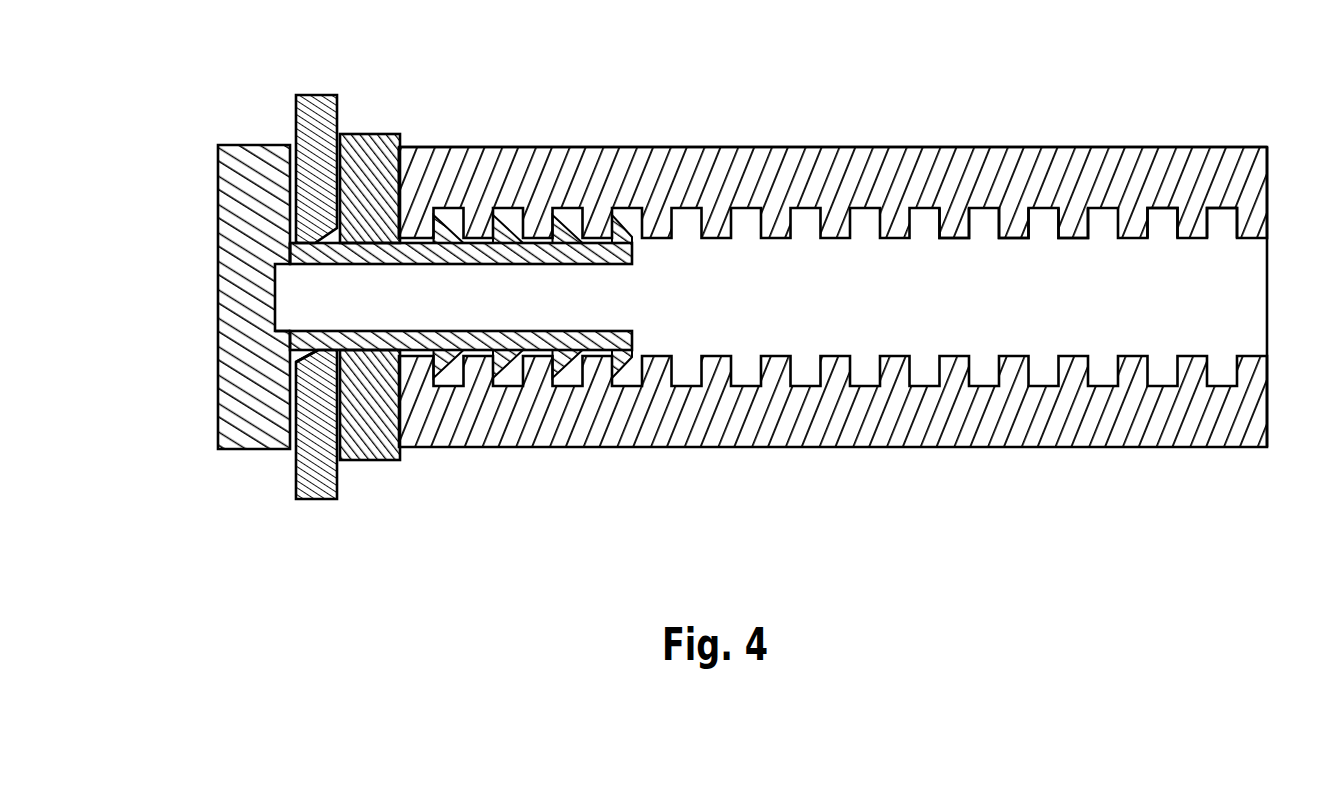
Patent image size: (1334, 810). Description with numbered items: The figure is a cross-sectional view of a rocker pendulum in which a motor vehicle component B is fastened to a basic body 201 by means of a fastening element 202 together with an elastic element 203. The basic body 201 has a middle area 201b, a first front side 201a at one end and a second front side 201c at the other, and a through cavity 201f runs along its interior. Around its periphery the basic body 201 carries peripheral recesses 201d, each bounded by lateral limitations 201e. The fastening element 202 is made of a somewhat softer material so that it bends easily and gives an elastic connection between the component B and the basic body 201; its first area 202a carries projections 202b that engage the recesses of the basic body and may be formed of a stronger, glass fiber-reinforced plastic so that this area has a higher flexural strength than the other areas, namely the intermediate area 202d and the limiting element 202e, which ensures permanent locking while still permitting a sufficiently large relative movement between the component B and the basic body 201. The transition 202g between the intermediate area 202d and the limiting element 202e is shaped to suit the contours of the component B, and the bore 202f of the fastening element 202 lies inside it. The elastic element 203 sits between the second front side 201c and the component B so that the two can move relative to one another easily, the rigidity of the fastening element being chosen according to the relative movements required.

The basic body 201 is at (752, 145).
The first front side 201a is at (1268, 213).
The middle area 201b is at (822, 185).
The second front side 201c is at (400, 175).
The peripheral recesses 201d is at (1220, 222).
The lateral limitations 201e is at (1073, 217).
The through cavity 201f is at (1003, 310).
The fastening element 202 is at (217, 215).
The first area 202a is at (537, 243).
The projections 202b is at (558, 363).
The intermediate area 202d is at (322, 250).
The limiting element 202e is at (272, 350).
The bore of inner tube 202f is at (492, 310).
The transition 202g is at (293, 364).
The elastic element 203 is at (365, 132).
The motor vehicle component B is at (315, 130).